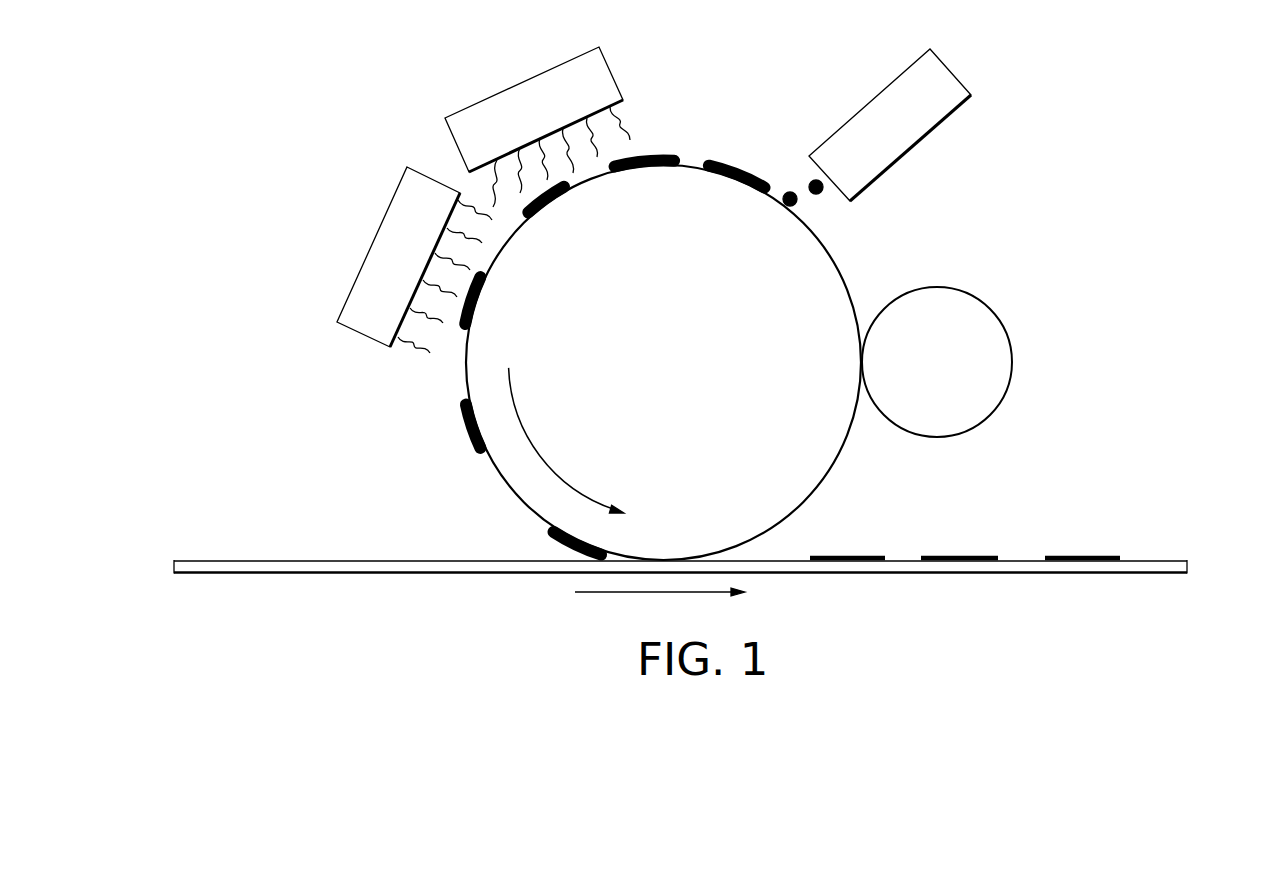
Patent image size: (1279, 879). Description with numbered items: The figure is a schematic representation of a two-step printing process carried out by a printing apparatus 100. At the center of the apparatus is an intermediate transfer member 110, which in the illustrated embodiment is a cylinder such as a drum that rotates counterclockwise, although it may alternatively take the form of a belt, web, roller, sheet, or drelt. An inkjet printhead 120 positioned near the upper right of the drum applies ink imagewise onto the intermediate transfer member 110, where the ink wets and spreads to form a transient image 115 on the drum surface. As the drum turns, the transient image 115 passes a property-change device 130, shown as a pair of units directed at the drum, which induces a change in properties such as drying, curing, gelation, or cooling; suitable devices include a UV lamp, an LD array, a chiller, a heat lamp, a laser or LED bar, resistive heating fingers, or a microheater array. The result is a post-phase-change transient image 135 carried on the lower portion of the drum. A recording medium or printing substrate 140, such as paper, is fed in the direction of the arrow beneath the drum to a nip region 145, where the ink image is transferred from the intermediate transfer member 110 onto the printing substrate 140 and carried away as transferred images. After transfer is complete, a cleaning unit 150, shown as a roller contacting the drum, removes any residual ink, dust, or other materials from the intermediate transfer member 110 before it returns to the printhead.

The printing apparatus 100 is at (1192, 33).
The intermediate transfer member 110 is at (835, 256).
The transient image 115 is at (743, 163).
The inkjet printhead 120 is at (947, 65).
The property-change device 130 is at (470, 102).
The post-phase-change transient image 135 is at (553, 538).
The printing substrate 140 is at (843, 572).
The nip region 145 is at (717, 558).
The cleaning unit 150 is at (979, 293).